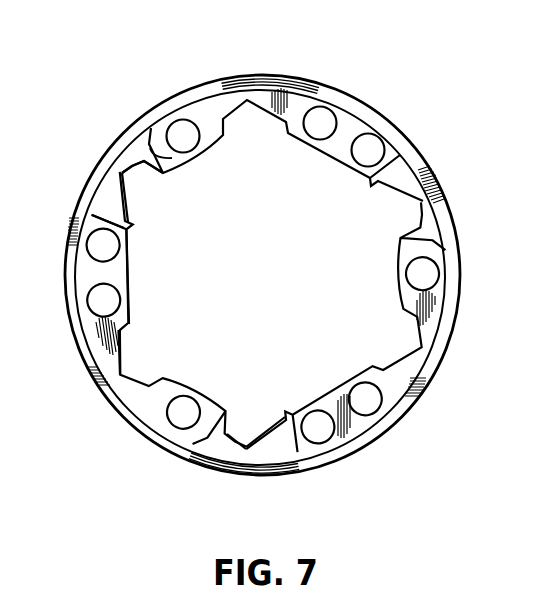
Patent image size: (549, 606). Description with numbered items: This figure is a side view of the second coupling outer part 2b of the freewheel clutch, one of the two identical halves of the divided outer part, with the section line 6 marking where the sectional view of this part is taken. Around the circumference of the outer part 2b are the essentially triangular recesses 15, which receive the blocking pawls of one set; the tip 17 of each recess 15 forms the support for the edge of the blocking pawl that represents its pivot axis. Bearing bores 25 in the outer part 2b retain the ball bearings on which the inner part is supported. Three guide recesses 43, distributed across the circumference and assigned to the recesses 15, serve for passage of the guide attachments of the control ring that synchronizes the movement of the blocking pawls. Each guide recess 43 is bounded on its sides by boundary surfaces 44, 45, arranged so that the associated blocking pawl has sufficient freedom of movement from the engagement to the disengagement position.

The outer part 2b is at (402, 119).
The section line 6- 6 is at (330, 19).
The recess 15 is at (119, 172).
The tip 17 is at (245, 445).
The bearing bore 25 is at (128, 276).
The guide recess 43 is at (148, 152).
The boundary surface 44 is at (164, 174).
The boundary surface 45 is at (110, 218).